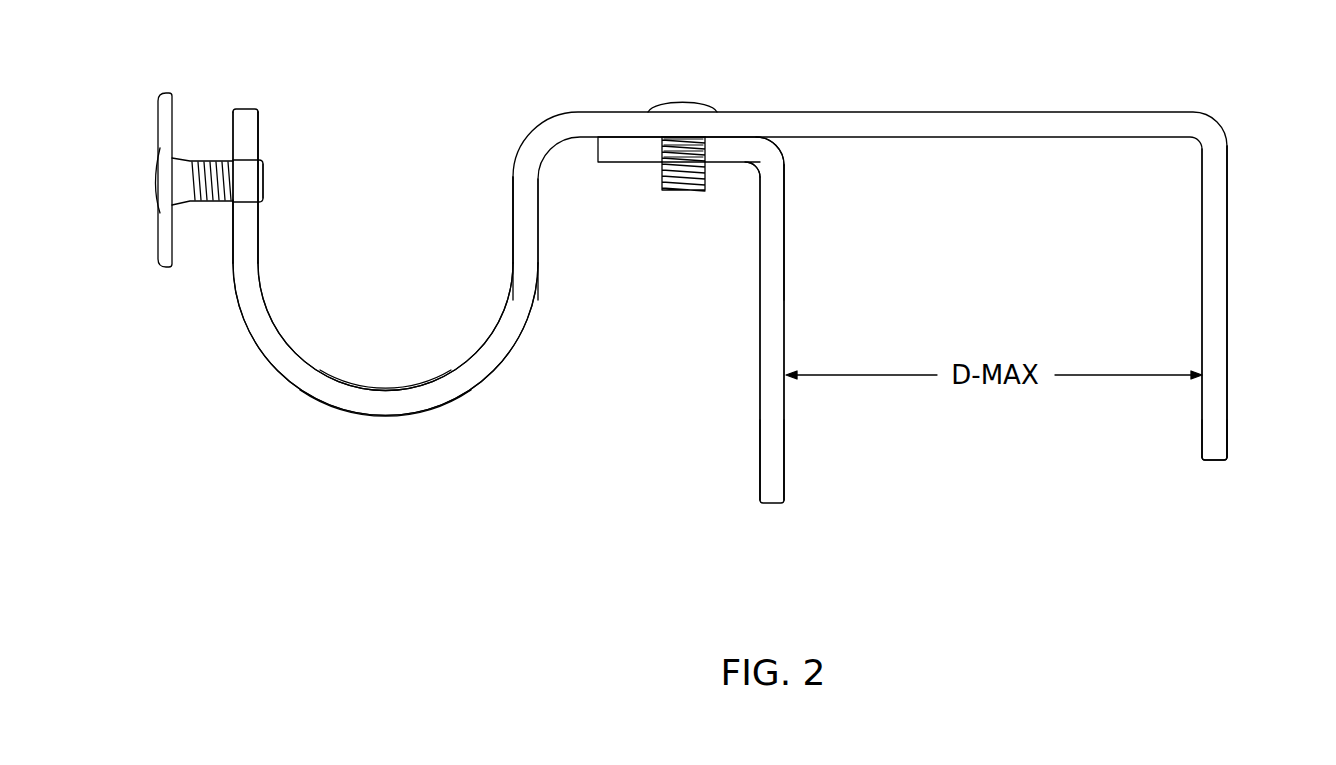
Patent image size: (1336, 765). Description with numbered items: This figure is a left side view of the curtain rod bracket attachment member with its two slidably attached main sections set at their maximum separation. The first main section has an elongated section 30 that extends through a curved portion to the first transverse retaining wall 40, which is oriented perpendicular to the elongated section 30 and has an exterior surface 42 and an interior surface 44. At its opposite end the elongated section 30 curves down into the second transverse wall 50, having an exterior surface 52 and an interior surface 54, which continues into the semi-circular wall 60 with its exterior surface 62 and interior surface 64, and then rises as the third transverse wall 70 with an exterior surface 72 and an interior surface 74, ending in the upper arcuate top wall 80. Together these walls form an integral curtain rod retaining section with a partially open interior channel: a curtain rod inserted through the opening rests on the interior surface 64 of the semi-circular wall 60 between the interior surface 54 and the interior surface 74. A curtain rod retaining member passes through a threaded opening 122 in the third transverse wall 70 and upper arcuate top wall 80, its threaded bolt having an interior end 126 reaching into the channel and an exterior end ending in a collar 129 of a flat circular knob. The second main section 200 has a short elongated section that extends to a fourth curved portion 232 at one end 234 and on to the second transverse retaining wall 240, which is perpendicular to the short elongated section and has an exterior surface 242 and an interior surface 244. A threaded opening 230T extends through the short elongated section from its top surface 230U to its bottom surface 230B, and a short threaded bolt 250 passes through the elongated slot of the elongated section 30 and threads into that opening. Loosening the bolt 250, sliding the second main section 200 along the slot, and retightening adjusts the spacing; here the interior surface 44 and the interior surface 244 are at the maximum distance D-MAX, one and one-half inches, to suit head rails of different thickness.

The elongated section 30 is at (1042, 88).
The first transverse retaining wall 40 is at (1248, 243).
The exterior surface 42 is at (1232, 334).
The interior surface 44 is at (1202, 431).
The second transverse wall 50 is at (540, 303).
The exterior surface 52 is at (540, 197).
The interior surface 54 is at (522, 229).
The semi-circular wall 60 is at (438, 445).
The exterior surface 62 is at (381, 416).
The interior surface 64 is at (388, 390).
The third transverse wall 70 is at (240, 318).
The exterior surface 72 is at (233, 277).
The interior surface 74 is at (259, 257).
The upper arcuate top wall 80 is at (248, 149).
The threaded opening 122 is at (250, 168).
The interior end 126 is at (264, 180).
The collar 129 is at (196, 160).
The second main section 200 is at (734, 260).
The threaded opening 230T is at (672, 147).
The top surface 230U is at (745, 137).
The bottom surface 230B is at (632, 163).
The fourth curved portion 232 is at (775, 173).
The end 234 is at (777, 155).
The second transverse retaining wall 240 is at (790, 336).
The exterior surface 242 is at (759, 466).
The interior surface 244 is at (787, 449).
The short threaded bolt 250 is at (688, 86).